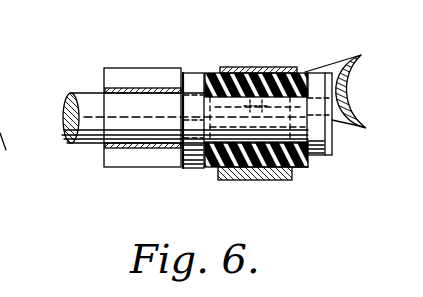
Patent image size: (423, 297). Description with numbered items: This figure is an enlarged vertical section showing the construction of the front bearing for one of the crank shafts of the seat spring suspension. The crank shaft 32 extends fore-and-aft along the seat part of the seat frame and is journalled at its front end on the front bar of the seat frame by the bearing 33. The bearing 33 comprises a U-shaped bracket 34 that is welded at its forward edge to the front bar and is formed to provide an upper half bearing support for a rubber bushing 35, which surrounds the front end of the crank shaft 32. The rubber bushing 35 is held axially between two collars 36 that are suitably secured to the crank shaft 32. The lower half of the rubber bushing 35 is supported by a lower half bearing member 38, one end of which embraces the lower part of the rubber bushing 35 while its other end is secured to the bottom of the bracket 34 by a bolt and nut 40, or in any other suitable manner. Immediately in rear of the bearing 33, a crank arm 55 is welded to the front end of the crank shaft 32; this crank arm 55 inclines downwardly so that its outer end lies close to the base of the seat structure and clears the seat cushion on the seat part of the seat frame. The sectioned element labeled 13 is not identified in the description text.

The flared end of coupling 13 is at (347, 128).
The crank shaft 32 is at (62, 110).
The bearing 33 is at (254, 71).
The U-shaped bracket 34 is at (306, 71).
The rubber bushing 35 is at (293, 170).
The collar 36 is at (193, 80).
The lower half bearing member 38 is at (253, 181).
The bolt and nut 40 is at (232, 67).
The crank arm 55 is at (117, 78).